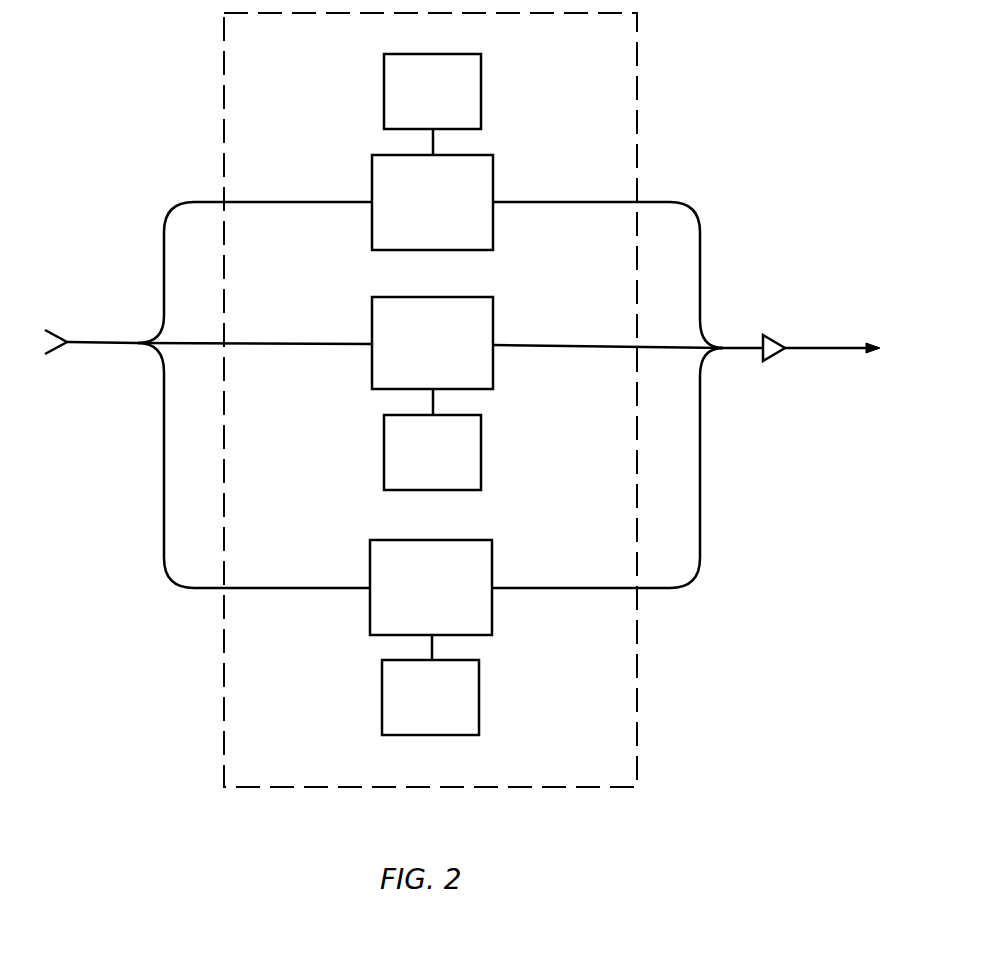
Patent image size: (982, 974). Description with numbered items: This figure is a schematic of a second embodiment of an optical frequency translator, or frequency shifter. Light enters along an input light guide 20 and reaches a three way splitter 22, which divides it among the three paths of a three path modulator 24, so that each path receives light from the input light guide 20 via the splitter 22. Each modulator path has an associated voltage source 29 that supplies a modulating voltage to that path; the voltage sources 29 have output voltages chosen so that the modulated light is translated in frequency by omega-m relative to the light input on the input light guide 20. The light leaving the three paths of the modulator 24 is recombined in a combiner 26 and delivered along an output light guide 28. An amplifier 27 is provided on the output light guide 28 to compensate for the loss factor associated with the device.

The input light guide 20 is at (92, 346).
The three way splitter 22 is at (135, 341).
The three path modulator 24 is at (638, 152).
The combiner 26 is at (728, 352).
The amplifier 27 is at (780, 356).
The output light guide 28 is at (810, 350).
The voltage source 29 is at (384, 97).